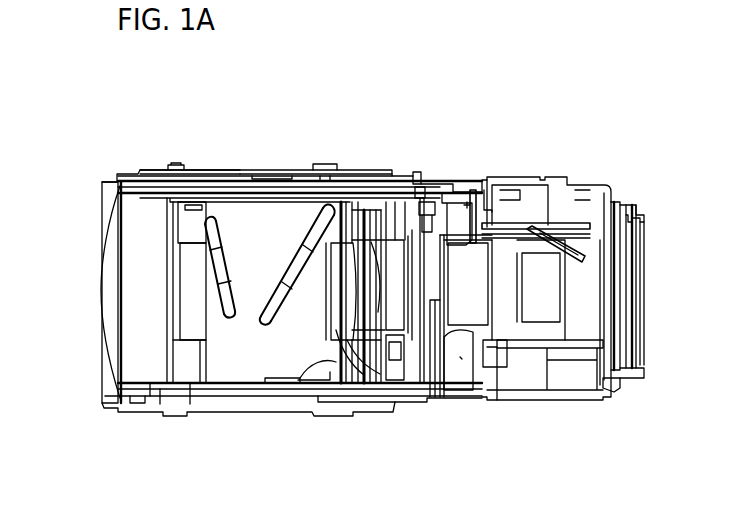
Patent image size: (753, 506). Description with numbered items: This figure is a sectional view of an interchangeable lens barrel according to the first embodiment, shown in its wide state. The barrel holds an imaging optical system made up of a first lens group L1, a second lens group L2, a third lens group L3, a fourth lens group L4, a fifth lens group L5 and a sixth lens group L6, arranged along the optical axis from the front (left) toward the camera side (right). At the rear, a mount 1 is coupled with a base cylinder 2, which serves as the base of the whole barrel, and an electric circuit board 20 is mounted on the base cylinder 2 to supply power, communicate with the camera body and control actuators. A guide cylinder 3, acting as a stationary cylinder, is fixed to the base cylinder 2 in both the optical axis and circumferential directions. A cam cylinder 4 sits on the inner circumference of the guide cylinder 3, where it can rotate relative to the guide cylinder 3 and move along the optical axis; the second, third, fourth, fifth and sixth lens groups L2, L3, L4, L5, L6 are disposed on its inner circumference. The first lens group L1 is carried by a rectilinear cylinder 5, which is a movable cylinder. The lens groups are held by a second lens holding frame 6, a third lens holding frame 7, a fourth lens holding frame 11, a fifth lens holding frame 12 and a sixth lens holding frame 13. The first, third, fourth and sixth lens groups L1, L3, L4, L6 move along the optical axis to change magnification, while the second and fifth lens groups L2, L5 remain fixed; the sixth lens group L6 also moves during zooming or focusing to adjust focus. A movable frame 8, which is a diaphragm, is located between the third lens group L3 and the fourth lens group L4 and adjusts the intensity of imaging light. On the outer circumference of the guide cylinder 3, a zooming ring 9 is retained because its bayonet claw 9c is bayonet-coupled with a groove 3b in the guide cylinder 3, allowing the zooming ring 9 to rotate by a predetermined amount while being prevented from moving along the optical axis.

The mount 1 is at (634, 207).
The base cylinder 2 is at (522, 176).
The guide cylinder 3 is at (443, 182).
The groove 3b is at (416, 174).
The cam cylinder 4 is at (300, 170).
The rectilinear cylinder 5 is at (226, 170).
The second lens holding frame 6 is at (192, 365).
The third lens holding frame 7 is at (322, 395).
The movable frame (diaphragm) 8 is at (336, 168).
The zooming ring 9 is at (177, 165).
The bayonet claw 9c is at (418, 172).
The fourth lens holding frame 11 is at (392, 346).
The fifth lens holding frame 12 is at (432, 330).
The sixth lens holding frame 13 is at (546, 246).
The electric circuit board 20 is at (612, 390).
The first lens group L1 is at (116, 290).
The second lens group L2 is at (178, 305).
The third lens group L3 is at (327, 300).
The fourth lens group L4 is at (372, 172).
The fifth lens group L5 is at (470, 310).
The sixth lens group L6 is at (555, 300).